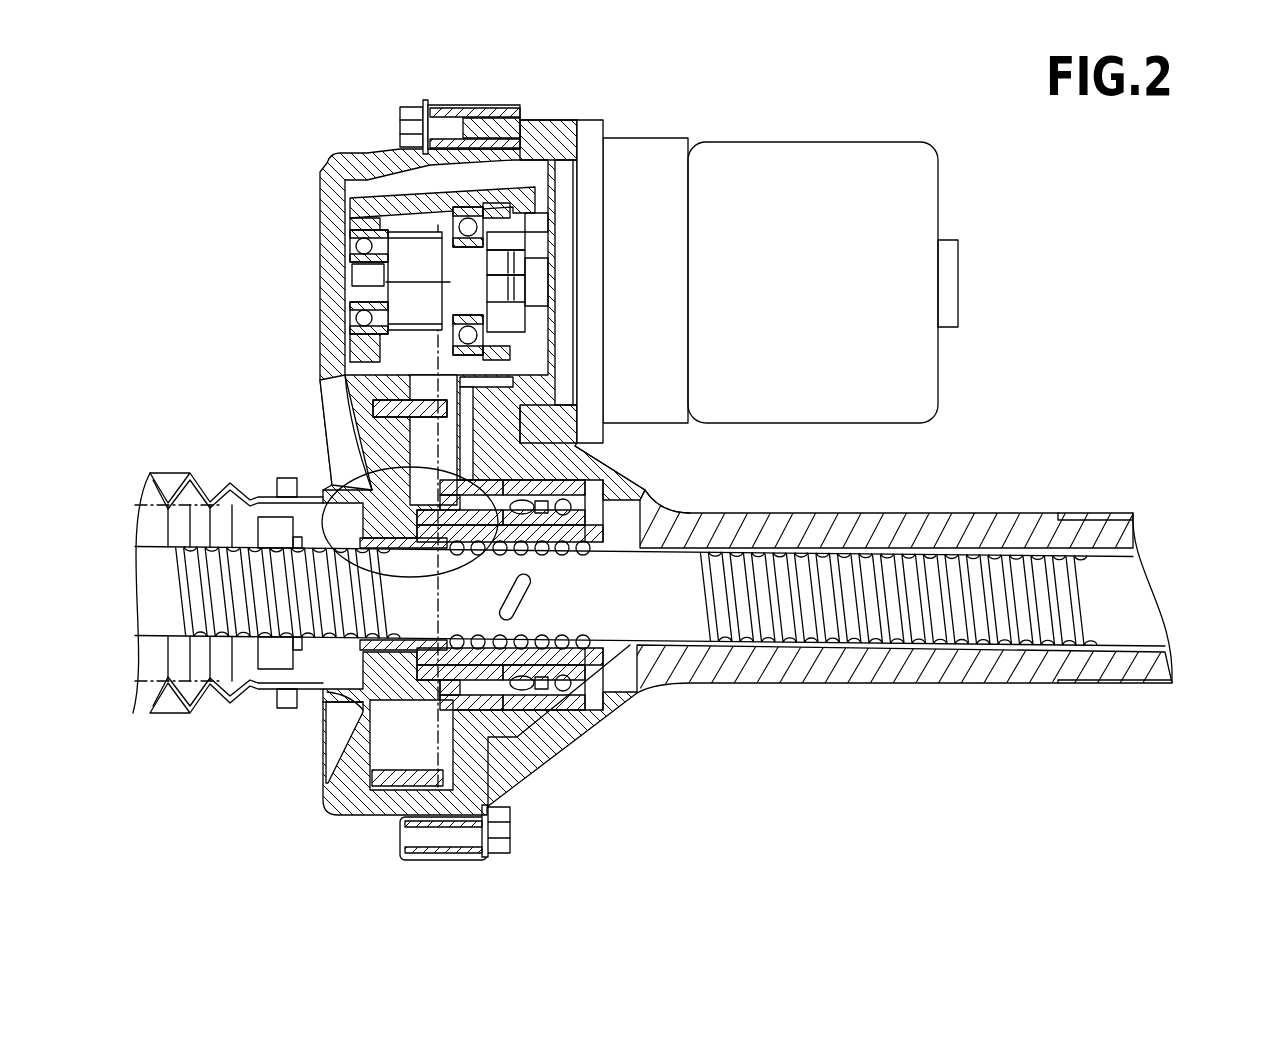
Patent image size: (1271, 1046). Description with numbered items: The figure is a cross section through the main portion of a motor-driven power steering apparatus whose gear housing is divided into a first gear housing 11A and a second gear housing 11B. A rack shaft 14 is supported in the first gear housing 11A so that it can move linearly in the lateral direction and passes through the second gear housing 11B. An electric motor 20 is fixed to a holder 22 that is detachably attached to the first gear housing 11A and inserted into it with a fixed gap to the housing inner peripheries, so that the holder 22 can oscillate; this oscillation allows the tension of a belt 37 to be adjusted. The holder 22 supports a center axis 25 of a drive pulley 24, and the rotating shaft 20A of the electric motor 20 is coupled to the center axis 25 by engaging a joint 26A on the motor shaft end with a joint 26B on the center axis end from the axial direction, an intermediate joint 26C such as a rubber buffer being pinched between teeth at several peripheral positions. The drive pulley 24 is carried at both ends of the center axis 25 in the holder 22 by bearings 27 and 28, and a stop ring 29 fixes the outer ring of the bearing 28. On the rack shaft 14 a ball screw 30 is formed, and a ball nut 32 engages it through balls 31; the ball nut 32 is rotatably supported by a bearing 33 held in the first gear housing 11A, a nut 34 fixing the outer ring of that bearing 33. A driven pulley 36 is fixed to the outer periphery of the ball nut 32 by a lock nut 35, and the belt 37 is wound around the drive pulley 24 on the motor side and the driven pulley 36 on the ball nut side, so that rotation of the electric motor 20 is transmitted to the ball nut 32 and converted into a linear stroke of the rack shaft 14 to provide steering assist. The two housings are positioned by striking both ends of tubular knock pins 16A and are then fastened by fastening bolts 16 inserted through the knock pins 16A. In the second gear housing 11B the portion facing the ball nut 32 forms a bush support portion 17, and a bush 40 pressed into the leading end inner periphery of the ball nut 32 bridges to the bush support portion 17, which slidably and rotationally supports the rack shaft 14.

The first gear housing 11A is at (773, 670).
The second gear housing 11B is at (340, 797).
The rack shaft 14 is at (1133, 585).
The fastening bolt 16 is at (413, 103).
The tubular knock pin 16A is at (462, 112).
The bush support portion 17 is at (385, 520).
The electric motor 20 is at (873, 138).
The rotating shaft 20A is at (543, 277).
The holder 22 is at (378, 200).
The drive pulley 24 is at (415, 237).
The center axis 25 is at (366, 272).
The joint 26A is at (508, 284).
The joint 26B is at (510, 237).
The intermediate joint 26C is at (512, 264).
The bearing 27 is at (356, 230).
The bearing 28 is at (470, 225).
The stop ring 29 is at (533, 233).
The ball screw 30 is at (560, 600).
The ball 31 is at (575, 560).
The ball nut 32 is at (633, 492).
The bearing 33 is at (600, 458).
The nut 34 is at (513, 450).
The lock nut 35 is at (360, 723).
The driven pulley 36 is at (378, 784).
The belt 37 is at (350, 372).
The bush 40 is at (315, 493).